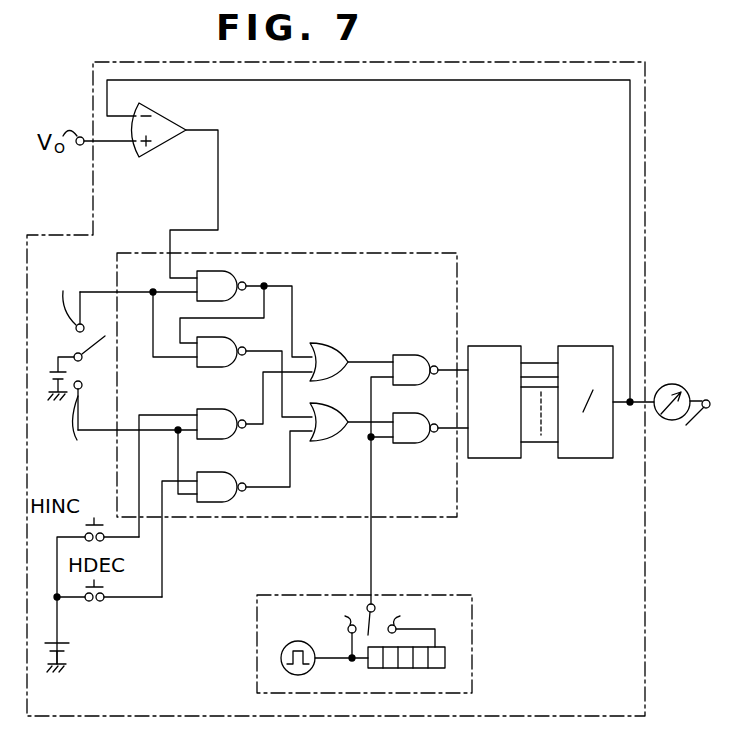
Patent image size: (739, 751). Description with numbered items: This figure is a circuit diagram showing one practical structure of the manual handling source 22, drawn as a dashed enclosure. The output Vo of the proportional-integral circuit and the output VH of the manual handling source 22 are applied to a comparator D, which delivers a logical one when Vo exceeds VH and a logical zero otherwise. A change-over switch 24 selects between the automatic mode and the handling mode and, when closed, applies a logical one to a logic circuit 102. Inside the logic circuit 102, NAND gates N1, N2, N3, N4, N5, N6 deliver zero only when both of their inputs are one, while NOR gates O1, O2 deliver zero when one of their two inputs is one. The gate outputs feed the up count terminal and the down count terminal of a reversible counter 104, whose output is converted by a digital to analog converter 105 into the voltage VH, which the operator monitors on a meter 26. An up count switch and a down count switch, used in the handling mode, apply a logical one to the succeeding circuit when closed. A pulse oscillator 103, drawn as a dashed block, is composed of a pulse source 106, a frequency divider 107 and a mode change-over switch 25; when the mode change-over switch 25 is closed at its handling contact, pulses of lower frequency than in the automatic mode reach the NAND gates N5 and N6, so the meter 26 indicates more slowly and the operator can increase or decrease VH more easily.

The manual handling source 22 is at (541, 48).
The change-over switch 24 is at (96, 357).
The mode change-over switch 25 is at (376, 622).
The meter 26 is at (668, 385).
The logic circuit 102 is at (426, 294).
The pulse oscillator 103 is at (466, 596).
The reversible counter 104 is at (500, 332).
The digital to analog converter 105 is at (590, 332).
The pulse source 106 is at (283, 648).
The frequency divider 107 is at (445, 648).
The comparator D is at (173, 122).
The NAND gate N1 is at (232, 272).
The NAND gate N2 is at (232, 338).
The NAND gate N3 is at (224, 410).
The NAND gate N4 is at (218, 472).
The NAND gate N5 is at (404, 358).
The NAND gate N6 is at (404, 418).
The NOR gate O1 is at (316, 344).
The NOR gate O2 is at (316, 406).